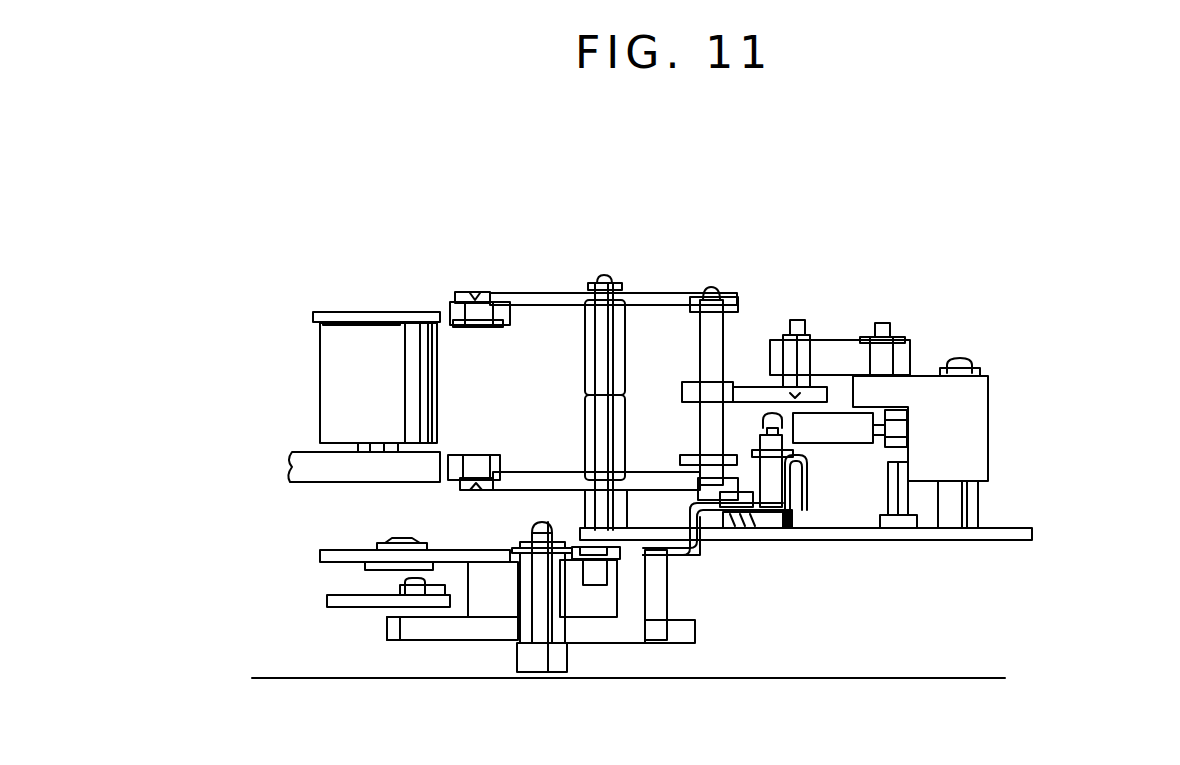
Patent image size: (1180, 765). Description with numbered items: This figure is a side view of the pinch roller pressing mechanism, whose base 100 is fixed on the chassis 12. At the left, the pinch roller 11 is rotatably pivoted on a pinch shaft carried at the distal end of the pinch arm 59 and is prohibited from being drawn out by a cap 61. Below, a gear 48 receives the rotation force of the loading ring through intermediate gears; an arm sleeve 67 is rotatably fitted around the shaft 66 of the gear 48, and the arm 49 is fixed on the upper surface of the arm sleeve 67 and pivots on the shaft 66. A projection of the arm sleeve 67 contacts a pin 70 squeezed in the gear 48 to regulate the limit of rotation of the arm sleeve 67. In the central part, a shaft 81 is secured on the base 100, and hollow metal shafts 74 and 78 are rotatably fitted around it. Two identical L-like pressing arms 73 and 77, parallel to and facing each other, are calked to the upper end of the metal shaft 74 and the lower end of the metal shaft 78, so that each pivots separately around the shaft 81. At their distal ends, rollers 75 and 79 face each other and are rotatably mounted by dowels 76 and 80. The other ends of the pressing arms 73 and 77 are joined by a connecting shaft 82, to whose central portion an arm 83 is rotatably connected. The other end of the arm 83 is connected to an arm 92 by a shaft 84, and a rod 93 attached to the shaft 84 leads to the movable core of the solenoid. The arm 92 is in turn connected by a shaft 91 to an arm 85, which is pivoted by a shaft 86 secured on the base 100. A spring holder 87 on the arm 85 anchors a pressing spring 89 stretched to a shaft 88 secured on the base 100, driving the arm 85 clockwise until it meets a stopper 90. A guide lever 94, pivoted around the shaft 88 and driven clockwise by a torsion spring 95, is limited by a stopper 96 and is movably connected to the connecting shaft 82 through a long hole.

The pinch roller 11 is at (333, 360).
The chassis 12 is at (950, 678).
The gear 48 is at (423, 635).
The arm 49 is at (466, 550).
The pinch arm 59 is at (310, 450).
The cap 61 is at (333, 312).
The shaft 66 is at (565, 650).
The arm sleeve 67 is at (495, 607).
The pin 70 is at (670, 602).
The pressing arm 73 is at (517, 297).
The metal shaft 74 is at (640, 298).
The roller 75 is at (508, 312).
The dowel 76 is at (447, 313).
The pressing arm 77 is at (555, 478).
The metal shaft 78 is at (622, 453).
The roller 79 is at (505, 455).
The dowel 80 is at (468, 490).
The shaft 81 is at (605, 278).
The connecting shaft 82 is at (735, 298).
The arm 83 is at (757, 388).
The shaft 84 is at (795, 326).
The arm 85 is at (977, 423).
The shaft 86 is at (975, 362).
The spring holder 87 is at (887, 445).
The shaft 88 is at (795, 513).
The pressing spring 89 is at (826, 437).
The stopper 90 is at (900, 527).
The shaft 91 is at (893, 325).
The arm 92 is at (843, 340).
The rod 93 is at (812, 368).
The guide lever 94 is at (703, 552).
The torsion spring 95 is at (786, 497).
The stopper 96 is at (745, 530).
The base 100 is at (1008, 530).